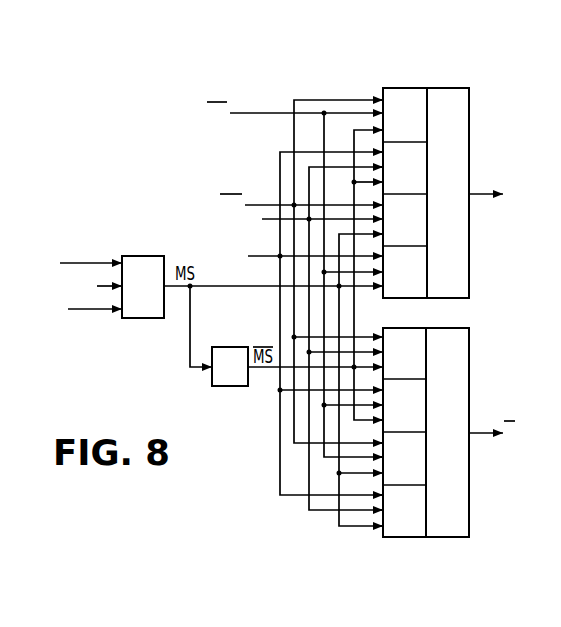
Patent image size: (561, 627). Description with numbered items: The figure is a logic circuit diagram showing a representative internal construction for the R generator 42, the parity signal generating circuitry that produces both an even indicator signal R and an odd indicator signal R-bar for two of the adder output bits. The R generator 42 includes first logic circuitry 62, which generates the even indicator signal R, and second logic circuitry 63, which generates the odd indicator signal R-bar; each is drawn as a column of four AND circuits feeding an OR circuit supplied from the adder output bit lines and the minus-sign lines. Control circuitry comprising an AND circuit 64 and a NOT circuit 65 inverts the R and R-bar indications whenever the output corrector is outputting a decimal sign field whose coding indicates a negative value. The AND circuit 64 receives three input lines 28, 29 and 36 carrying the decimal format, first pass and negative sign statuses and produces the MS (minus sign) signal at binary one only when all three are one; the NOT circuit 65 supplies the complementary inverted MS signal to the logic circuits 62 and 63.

The input line 28 is at (102, 262).
The input line 29 is at (102, 283).
The input line 36 is at (92, 311).
The R generator 42 is at (276, 73).
The first logic circuitry 62 is at (416, 85).
The second logic circuitry 63 is at (451, 323).
The AND circuit 64 is at (157, 256).
The NOT circuit 65 is at (233, 347).